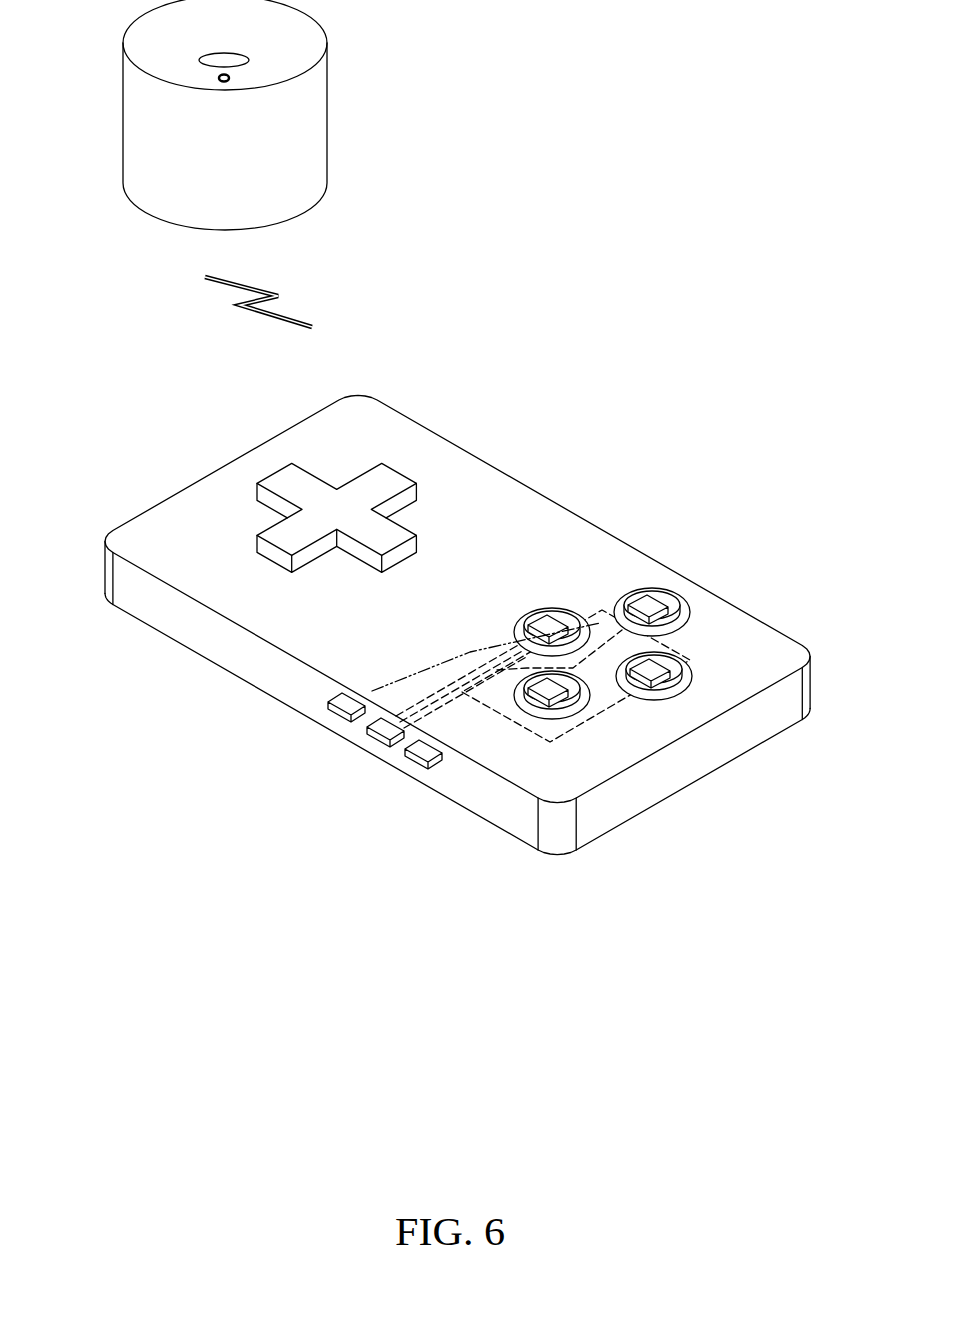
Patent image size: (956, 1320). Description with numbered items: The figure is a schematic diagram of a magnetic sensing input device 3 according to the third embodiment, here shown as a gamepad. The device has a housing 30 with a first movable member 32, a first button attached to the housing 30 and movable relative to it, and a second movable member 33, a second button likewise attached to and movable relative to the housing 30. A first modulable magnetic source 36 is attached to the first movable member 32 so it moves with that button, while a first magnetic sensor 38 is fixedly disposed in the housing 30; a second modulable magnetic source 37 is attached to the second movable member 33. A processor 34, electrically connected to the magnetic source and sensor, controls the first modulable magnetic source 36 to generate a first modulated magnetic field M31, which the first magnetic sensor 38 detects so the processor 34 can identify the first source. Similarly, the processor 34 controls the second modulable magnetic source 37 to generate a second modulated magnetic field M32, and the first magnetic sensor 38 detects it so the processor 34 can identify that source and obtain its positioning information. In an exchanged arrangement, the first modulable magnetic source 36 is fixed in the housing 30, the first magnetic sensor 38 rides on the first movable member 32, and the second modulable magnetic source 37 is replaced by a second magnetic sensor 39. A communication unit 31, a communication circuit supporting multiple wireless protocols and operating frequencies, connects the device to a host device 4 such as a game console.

The magnetic sensing input device 3 is at (589, 407).
The host device 4 is at (327, 108).
The housing 30 is at (181, 639).
The communication unit 31 is at (406, 758).
The first movable member 32 is at (530, 633).
The second movable member 33 is at (688, 622).
The processor 34 is at (370, 740).
The first modulable magnetic source 36 is at (547, 613).
The second modulable magnetic source 37 is at (632, 592).
The first magnetic sensor 38 is at (336, 716).
The second magnetic sensor 39 is at (650, 606).
The first modulated magnetic field M31 is at (399, 677).
The second modulated magnetic field M32 is at (605, 623).